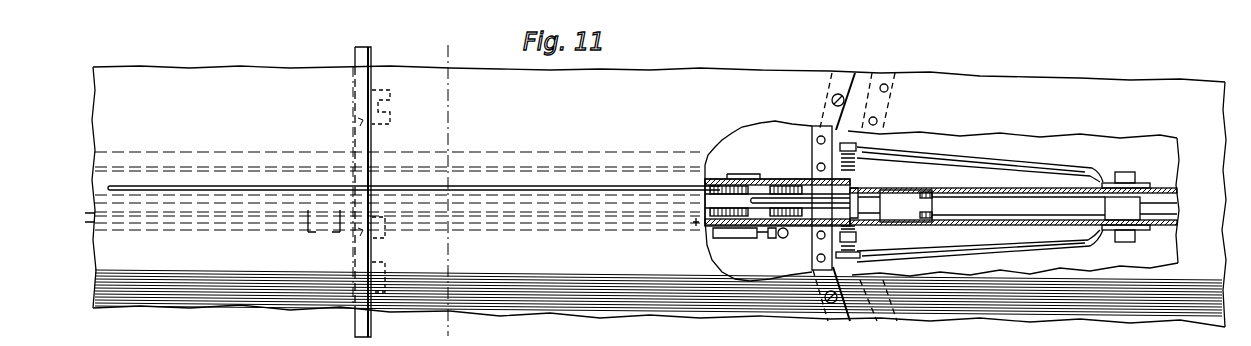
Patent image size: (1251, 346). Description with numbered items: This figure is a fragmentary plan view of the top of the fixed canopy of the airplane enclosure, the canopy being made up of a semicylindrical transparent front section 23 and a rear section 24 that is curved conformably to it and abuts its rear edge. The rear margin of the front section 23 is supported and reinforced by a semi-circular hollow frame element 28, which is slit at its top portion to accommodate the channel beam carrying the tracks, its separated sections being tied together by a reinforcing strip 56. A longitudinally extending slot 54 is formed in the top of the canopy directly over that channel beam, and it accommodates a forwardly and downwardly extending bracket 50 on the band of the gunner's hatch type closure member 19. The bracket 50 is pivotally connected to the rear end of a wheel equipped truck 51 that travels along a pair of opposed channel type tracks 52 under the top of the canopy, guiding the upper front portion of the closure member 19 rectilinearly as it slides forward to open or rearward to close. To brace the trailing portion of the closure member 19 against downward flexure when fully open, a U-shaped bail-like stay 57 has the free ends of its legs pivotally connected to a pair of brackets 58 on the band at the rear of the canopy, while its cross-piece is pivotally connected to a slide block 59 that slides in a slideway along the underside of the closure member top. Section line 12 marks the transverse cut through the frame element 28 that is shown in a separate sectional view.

The section line 12 is at (432, 57).
The gunner's hatch type closure member 19 is at (1026, 83).
The front section 23 is at (163, 78).
The rear section 24 is at (673, 74).
The frame element 28 is at (375, 54).
The bracket 50 is at (868, 197).
The truck 51 is at (806, 188).
The tracks 52 is at (750, 178).
The slot 54 is at (588, 178).
The reinforcing strip 56 is at (391, 107).
The stay 57 is at (1063, 157).
The brackets 58 is at (856, 150).
The slide block 59 is at (1133, 187).